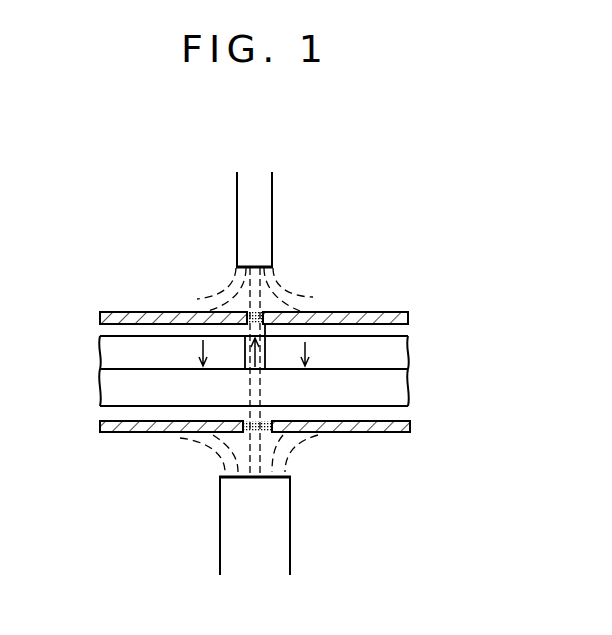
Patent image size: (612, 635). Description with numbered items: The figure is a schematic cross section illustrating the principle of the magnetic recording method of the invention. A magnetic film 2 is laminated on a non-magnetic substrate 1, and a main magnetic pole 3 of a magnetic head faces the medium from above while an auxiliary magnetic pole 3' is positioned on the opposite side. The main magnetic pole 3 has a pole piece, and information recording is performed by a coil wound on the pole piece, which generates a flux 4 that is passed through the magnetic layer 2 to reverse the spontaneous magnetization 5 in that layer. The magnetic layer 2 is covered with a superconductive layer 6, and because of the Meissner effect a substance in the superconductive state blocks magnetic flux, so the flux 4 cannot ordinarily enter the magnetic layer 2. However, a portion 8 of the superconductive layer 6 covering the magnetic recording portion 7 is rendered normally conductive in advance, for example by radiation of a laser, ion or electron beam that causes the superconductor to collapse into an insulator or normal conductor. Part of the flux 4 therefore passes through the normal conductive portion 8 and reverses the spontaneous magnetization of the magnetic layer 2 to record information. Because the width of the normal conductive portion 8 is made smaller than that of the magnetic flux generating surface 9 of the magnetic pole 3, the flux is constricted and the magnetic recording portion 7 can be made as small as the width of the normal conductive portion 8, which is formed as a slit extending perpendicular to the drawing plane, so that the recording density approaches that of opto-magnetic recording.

The non-magnetic substrate 1 is at (406, 393).
The magnetic film 2 is at (406, 352).
The main magnetic pole 3 is at (276, 218).
The auxiliary magnetic pole 3' is at (284, 526).
The flux 4 is at (221, 291).
The spontaneous magnetization 5 is at (200, 346).
The superconductive layer 6 is at (408, 319).
The magnetic recording portion 7 is at (243, 357).
The normal conductive portion 8 is at (265, 326).
The magnetic flux generating surface 9 is at (257, 265).